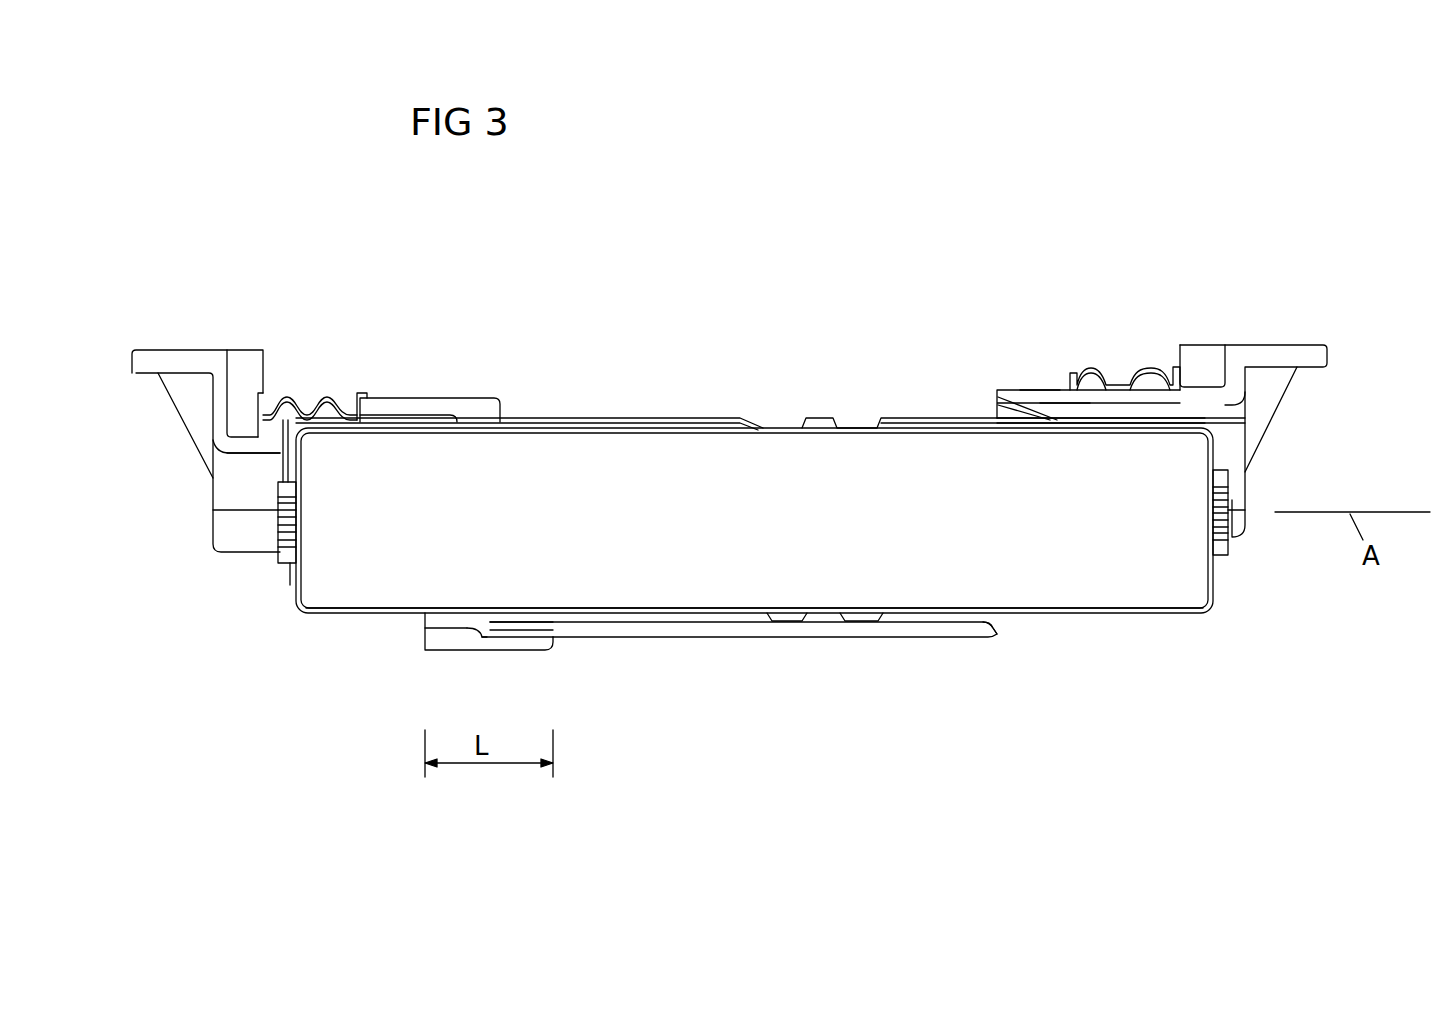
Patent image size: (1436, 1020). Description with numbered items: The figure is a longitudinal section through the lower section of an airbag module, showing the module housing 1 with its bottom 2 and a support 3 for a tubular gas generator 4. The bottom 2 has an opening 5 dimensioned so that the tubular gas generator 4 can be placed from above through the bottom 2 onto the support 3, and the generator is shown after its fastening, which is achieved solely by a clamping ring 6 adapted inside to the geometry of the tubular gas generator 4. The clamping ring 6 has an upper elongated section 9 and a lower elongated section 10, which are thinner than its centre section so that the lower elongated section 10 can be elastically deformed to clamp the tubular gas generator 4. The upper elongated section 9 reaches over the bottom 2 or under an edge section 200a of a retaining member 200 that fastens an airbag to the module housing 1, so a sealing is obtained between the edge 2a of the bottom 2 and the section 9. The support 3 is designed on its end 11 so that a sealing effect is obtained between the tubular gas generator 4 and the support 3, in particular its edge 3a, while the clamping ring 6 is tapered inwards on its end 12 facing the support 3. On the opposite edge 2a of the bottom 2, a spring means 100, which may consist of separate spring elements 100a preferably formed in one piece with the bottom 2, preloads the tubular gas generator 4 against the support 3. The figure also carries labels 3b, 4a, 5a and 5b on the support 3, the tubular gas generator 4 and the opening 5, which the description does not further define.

The module housing 1 is at (1293, 358).
The bottom 2 is at (1117, 397).
The edge of the bottom 2a is at (282, 410).
The support 3 is at (793, 627).
The edge of the support 3a is at (482, 637).
The bottom plate lower surface 3b is at (502, 633).
The tubular gas generator 4 is at (1180, 577).
The case bottom wall 4a is at (1107, 583).
The opening 5 is at (635, 405).
The cover flange 5a is at (247, 447).
The cover end portion 5b is at (1018, 400).
The clamping ring 6 is at (437, 410).
The upper elongated section 9 is at (412, 407).
The lower elongated section 10 is at (453, 640).
The end of the support 11 is at (550, 640).
The end of the clamping ring 12 is at (537, 630).
The spring means 100 is at (1046, 380).
The spring elements 100a is at (1037, 400).
The retaining member 200 is at (325, 400).
The edge section of the retaining member 200a is at (362, 395).